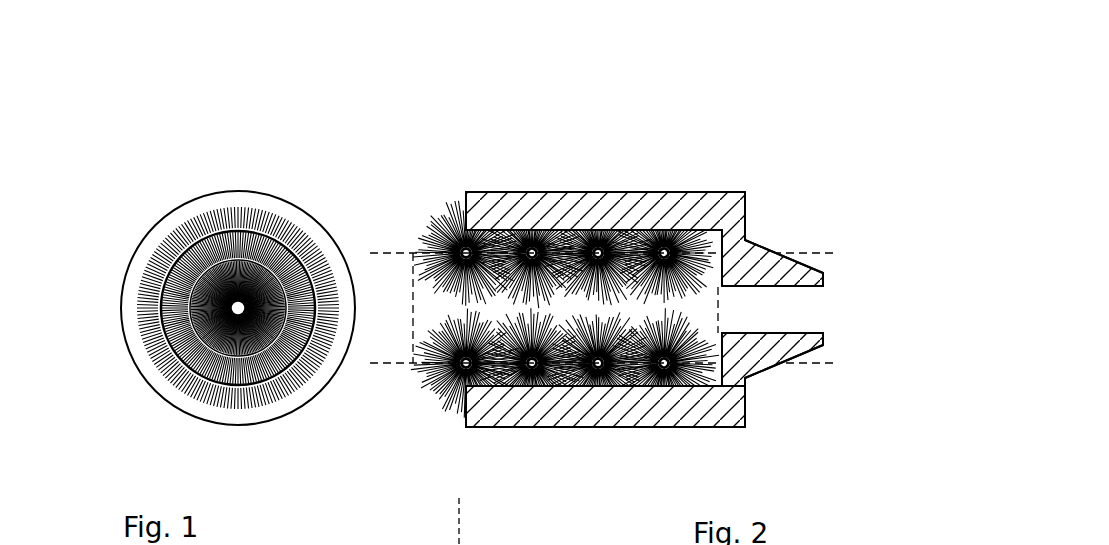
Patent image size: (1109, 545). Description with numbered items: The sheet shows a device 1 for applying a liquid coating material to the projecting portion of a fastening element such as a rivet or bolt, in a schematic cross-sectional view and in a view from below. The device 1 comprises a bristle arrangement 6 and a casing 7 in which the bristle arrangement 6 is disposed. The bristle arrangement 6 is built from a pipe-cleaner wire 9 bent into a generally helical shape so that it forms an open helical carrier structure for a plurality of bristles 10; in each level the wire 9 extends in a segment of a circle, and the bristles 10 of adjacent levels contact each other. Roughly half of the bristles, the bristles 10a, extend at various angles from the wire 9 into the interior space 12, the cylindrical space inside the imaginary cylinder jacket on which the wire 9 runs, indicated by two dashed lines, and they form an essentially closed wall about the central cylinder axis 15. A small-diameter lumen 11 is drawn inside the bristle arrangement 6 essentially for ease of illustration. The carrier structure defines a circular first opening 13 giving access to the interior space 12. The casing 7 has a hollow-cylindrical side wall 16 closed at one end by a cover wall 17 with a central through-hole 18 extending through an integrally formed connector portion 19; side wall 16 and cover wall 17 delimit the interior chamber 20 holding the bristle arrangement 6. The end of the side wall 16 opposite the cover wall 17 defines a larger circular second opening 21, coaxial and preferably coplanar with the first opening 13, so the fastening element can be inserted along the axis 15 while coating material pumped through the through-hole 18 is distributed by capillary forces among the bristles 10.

In FIG. 1, the device 1 is at (203, 261).
In FIG. 2, the device 1 is at (601, 281).
In FIG. 1, the bristle arrangement 6 is at (293, 217).
In FIG. 2, the bristle arrangement 6 is at (548, 287).
In FIG. 2, the casing 7 is at (563, 442).
In FIG. 1, the wire 9 is at (173, 262).
In FIG. 1, the bristles 10 is at (235, 208).
In FIG. 1, the bristles extending into the interior space 10a is at (140, 298).
In FIG. 2, the lumen 11 is at (663, 307).
In FIG. 1, the interior space 12 is at (150, 275).
In FIG. 2, the interior space 12 is at (503, 306).
In FIG. 2, the first opening 13 is at (450, 250).
In FIG. 2, the central cylinder axis 15 is at (458, 518).
In FIG. 2, the side wall 16 is at (563, 200).
In FIG. 2, the cover wall 17 is at (745, 375).
In FIG. 2, the through-hole 18 is at (822, 285).
In FIG. 2, the connector portion 19 is at (785, 345).
In FIG. 2, the interior chamber 20 is at (737, 367).
In FIG. 2, the second opening 21 is at (463, 235).